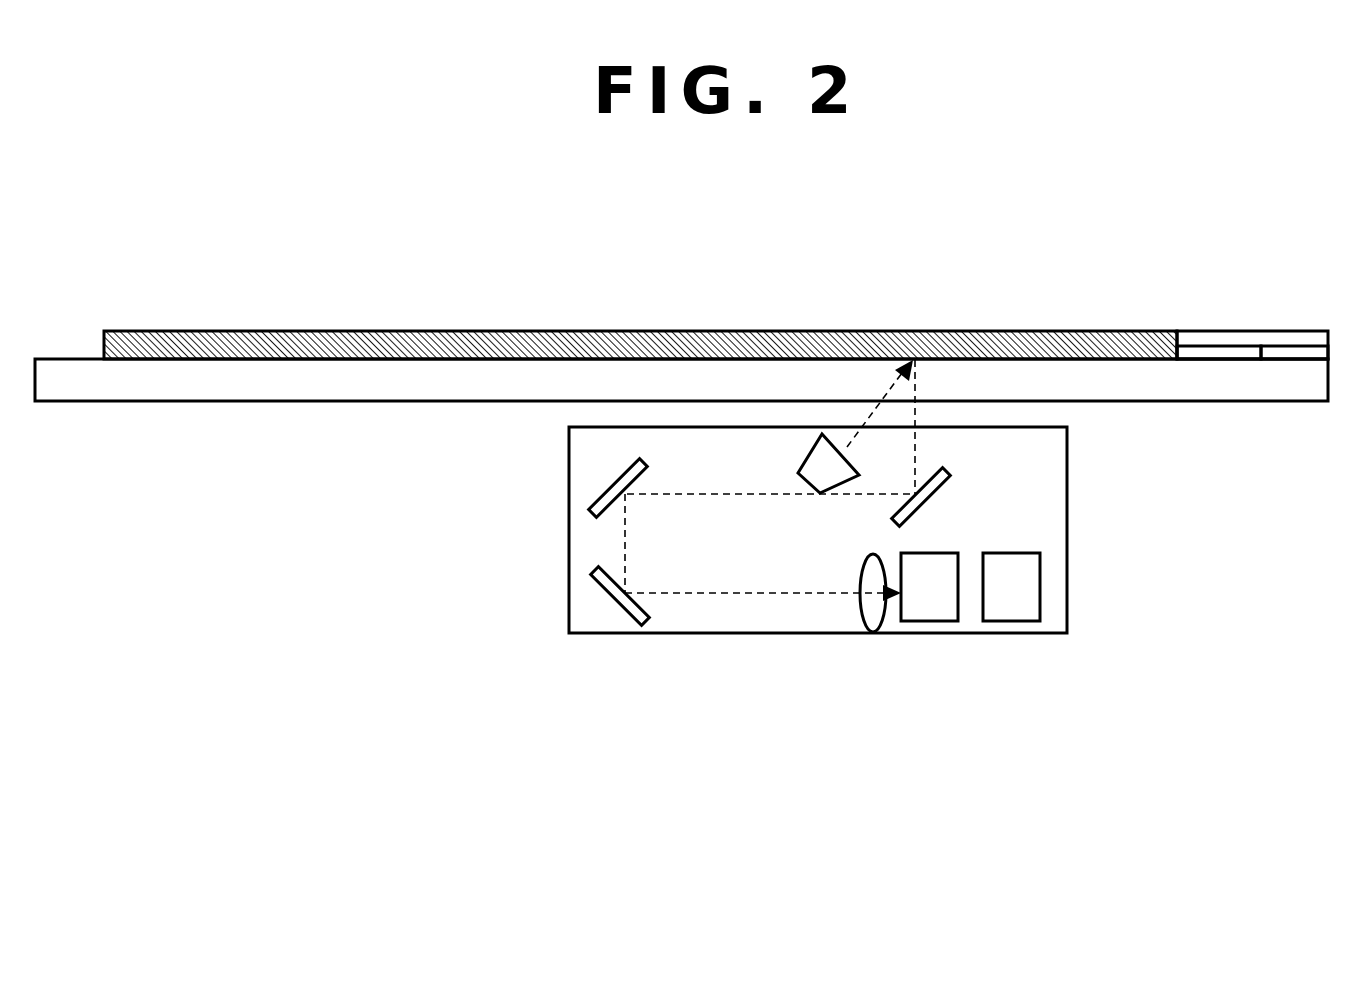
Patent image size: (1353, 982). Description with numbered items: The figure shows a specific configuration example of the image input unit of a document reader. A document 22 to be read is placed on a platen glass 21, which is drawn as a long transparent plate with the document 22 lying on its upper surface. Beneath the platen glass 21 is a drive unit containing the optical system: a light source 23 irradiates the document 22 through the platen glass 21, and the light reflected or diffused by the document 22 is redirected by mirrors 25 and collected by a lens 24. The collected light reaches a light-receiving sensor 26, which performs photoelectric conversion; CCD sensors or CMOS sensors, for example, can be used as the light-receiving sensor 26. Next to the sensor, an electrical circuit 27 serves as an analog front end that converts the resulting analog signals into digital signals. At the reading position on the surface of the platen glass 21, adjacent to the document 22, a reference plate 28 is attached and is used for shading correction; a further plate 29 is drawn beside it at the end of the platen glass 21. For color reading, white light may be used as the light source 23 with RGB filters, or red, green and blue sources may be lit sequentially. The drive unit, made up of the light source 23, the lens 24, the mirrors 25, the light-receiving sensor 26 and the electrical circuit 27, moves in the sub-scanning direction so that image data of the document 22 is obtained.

The platen glass 21 is at (187, 382).
The document 22 is at (250, 352).
The light source 23 is at (807, 457).
The lens 24 is at (862, 610).
The mirrors 25 is at (612, 473).
The light-receiving sensor 26 is at (927, 623).
The electrical circuit 27 is at (1018, 623).
The reference plate 28 is at (1220, 353).
The end mark 29 is at (1296, 352).